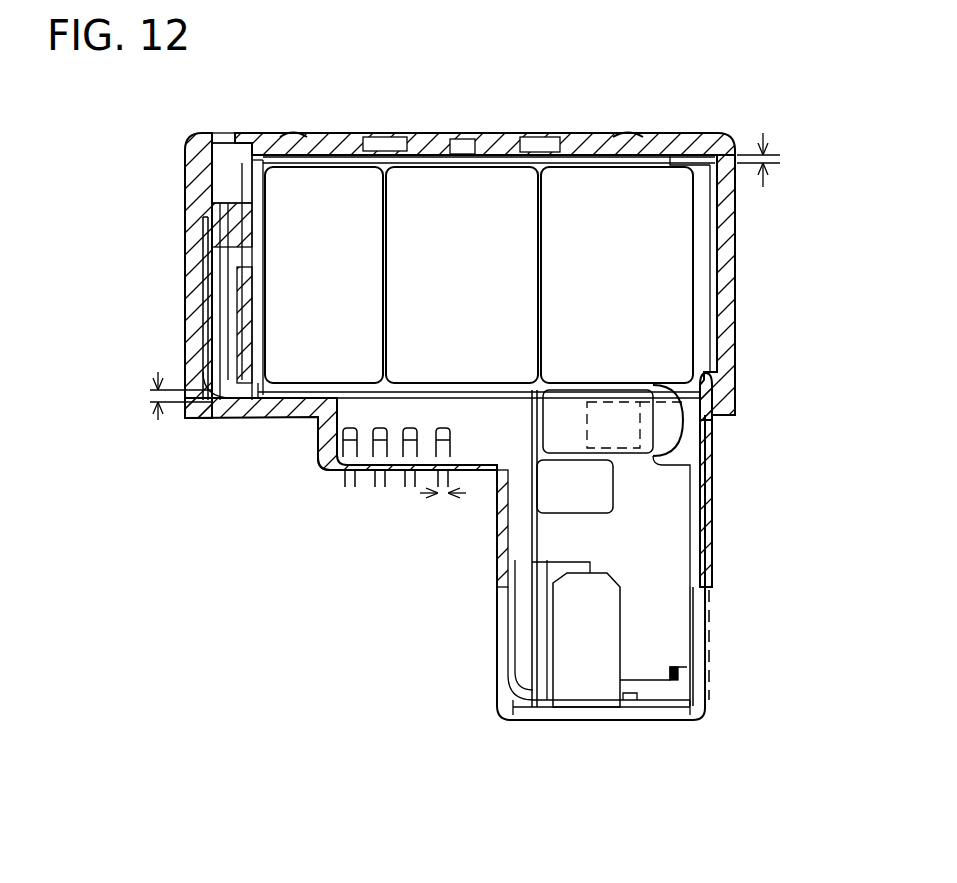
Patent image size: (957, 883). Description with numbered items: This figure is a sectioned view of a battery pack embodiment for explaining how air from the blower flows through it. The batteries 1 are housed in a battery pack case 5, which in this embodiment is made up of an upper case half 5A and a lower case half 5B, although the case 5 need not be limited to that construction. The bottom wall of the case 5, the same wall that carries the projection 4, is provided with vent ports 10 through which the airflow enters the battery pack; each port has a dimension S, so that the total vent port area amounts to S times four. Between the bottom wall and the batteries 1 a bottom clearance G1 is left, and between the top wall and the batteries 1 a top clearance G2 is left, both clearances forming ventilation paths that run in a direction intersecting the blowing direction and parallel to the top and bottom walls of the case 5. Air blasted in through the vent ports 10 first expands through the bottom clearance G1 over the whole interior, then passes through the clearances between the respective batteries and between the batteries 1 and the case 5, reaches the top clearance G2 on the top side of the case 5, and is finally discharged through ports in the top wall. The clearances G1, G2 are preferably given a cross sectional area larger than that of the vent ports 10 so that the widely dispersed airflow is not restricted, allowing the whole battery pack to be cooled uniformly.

The batteries 1 is at (330, 192).
The projection 4 is at (702, 653).
The battery pack case 5 is at (460, 427).
The upper case half 5A is at (187, 233).
The lower case half 5B is at (496, 649).
The vent ports 10 is at (440, 468).
The vent port cross sectional dimension S is at (443, 518).
The bottom clearance G1 is at (159, 396).
The top clearance G2 is at (781, 160).